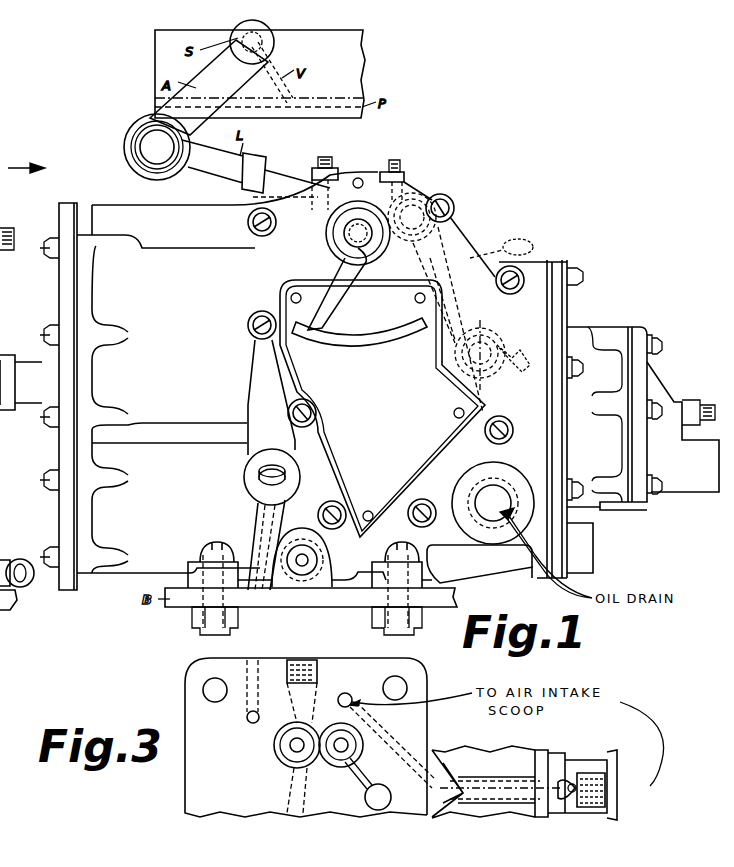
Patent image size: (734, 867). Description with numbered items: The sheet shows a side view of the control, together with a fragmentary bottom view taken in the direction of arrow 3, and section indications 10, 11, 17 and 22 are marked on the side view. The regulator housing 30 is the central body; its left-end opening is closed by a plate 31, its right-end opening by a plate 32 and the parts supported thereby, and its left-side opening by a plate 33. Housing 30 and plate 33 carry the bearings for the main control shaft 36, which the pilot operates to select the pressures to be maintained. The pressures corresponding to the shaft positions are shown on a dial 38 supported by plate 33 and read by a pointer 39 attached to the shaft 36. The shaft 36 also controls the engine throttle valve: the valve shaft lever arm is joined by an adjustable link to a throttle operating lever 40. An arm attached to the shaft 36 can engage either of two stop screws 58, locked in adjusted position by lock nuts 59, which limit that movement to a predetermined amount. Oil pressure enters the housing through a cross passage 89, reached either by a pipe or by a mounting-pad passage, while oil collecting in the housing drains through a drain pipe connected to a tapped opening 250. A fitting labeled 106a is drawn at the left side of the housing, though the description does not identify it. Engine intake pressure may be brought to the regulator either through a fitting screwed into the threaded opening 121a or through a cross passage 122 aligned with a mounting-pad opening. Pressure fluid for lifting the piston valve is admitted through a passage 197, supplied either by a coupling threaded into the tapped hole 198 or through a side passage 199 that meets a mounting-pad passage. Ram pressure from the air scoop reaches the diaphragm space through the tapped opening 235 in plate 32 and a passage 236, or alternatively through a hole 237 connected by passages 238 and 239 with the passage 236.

In FIG. 1, the arrow 3 is at (347, 640).
In FIG. 1, the section line 10- 10 is at (388, 128).
In FIG. 1, the section line 11- 11 is at (502, 205).
In FIG. 1, the section line 17- 17 is at (325, 373).
In FIG. 1, the section line 22- 22 is at (273, 470).
In FIG. 1, the regulator housing 30 is at (128, 210).
In FIG. 3, the regulator housing 30 is at (489, 754).
In FIG. 1, the plate 31 is at (66, 210).
In FIG. 1, the plate 32 is at (590, 558).
In FIG. 3, the plate 32 is at (610, 758).
In FIG. 1, the plate 33 is at (458, 236).
In FIG. 1, the main control shaft 36 is at (345, 238).
In FIG. 1, the dial 38 is at (378, 350).
In FIG. 1, the pointer 39 is at (335, 298).
In FIG. 1, the throttle operating lever 40 is at (494, 314).
In FIG. 1, the stop screws 58 is at (402, 152).
In FIG. 1, the lock nuts 59 is at (405, 166).
In FIG. 3, the cross passage 89 is at (340, 752).
In FIG. 1, the fitting 106a is at (17, 498).
In FIG. 1, the threaded opening 121a is at (258, 482).
In FIG. 1, the cross passage 122 is at (262, 518).
In FIG. 3, the cross passage 122 is at (247, 717).
In FIG. 1, the passage 197 is at (310, 565).
In FIG. 3, the passage 197 is at (292, 793).
In FIG. 1, the tapped hole 198 is at (306, 540).
In FIG. 3, the tapped hole 198 is at (316, 665).
In FIG. 3, the side passage 199 is at (290, 746).
In FIG. 3, the tapped opening 235 is at (608, 788).
In FIG. 3, the passage 236 is at (568, 770).
In FIG. 3, the hole 237 is at (346, 694).
In FIG. 3, the passage 238 is at (428, 722).
In FIG. 3, the passage 239 is at (517, 786).
In FIG. 1, the tapped opening 250 is at (500, 503).